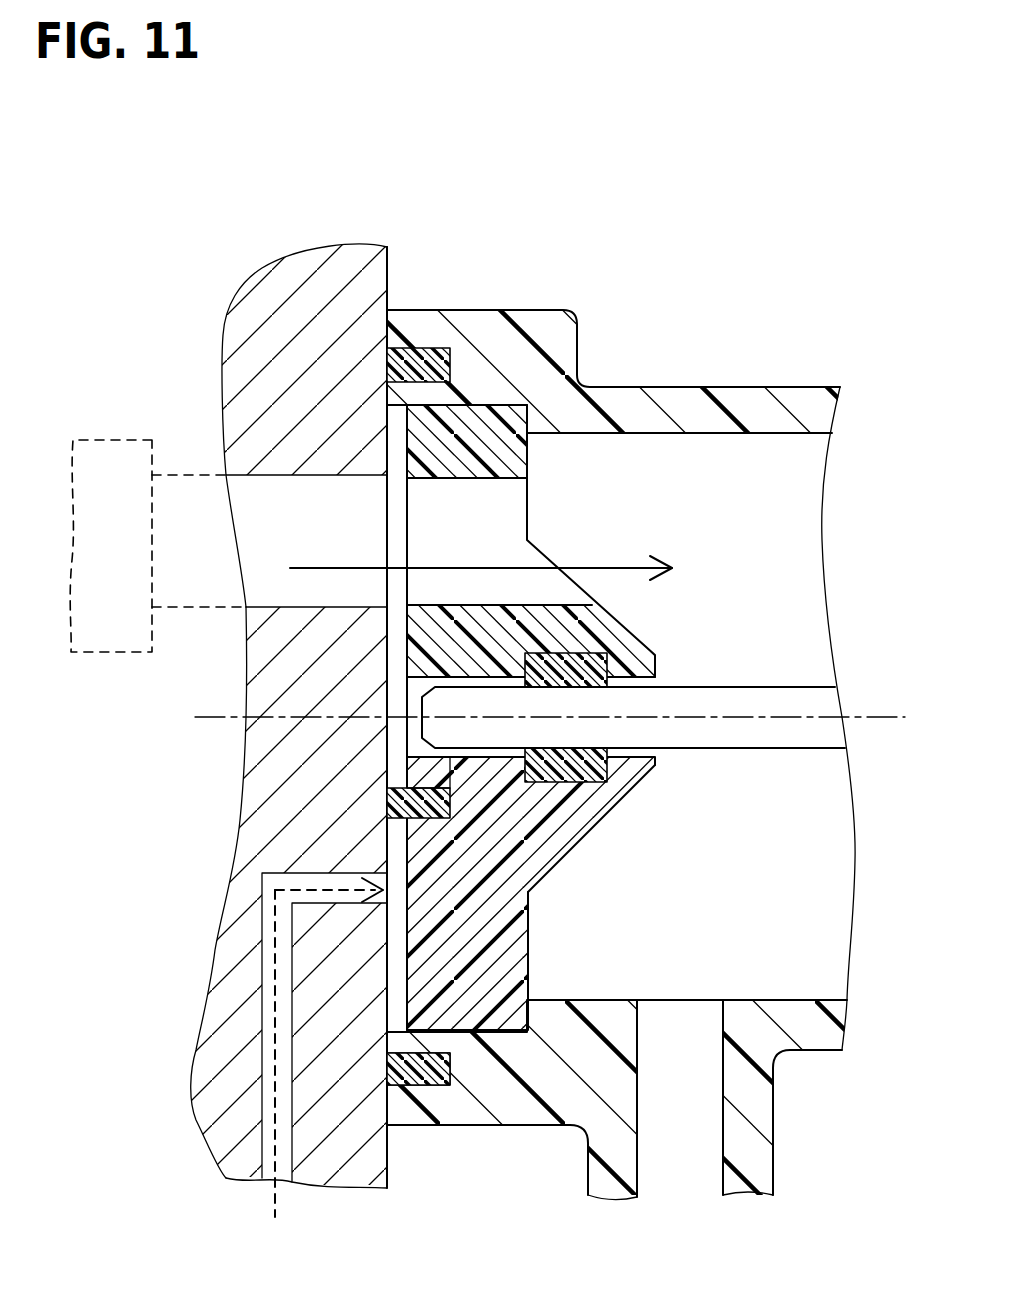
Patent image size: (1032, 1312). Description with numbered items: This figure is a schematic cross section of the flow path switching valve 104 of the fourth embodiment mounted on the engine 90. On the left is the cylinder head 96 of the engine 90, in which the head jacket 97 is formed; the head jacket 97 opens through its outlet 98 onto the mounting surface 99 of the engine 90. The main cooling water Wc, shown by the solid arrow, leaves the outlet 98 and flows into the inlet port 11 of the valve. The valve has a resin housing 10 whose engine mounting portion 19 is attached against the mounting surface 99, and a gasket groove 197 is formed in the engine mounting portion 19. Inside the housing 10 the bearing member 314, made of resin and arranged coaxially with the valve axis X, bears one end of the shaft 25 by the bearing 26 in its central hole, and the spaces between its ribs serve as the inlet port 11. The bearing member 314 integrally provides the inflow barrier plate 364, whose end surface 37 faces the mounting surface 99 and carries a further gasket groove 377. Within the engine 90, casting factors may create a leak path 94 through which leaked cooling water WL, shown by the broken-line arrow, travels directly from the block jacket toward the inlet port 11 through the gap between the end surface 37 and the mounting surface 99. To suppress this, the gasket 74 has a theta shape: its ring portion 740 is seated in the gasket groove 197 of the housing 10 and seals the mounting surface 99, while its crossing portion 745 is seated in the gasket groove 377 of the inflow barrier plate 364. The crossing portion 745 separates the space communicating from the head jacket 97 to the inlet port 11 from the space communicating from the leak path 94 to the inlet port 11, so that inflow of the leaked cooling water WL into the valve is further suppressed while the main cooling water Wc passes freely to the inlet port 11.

The housing 10 is at (708, 380).
The inlet port 11 is at (400, 497).
The engine mounting portion 19 is at (387, 330).
The shaft 25 is at (763, 705).
The bearing 26 is at (565, 665).
The end surface 37 is at (400, 847).
The gasket 74 is at (435, 1087).
The engine 90 is at (202, 328).
The leak path 94 is at (267, 1118).
The cylinder head 96 is at (250, 352).
The head jacket 97 is at (105, 468).
The outlet 98 is at (258, 524).
The mounting surface 99 is at (392, 272).
The flow path switching valve 104 is at (781, 332).
The gasket groove 197 is at (452, 350).
The bearing member 314 is at (640, 816).
The inflow barrier plate 364 is at (447, 958).
The gasket groove 377 is at (437, 818).
The ring portion 740 is at (388, 1073).
The crossing portion 745 is at (393, 790).
The cooling water Wc is at (322, 565).
The cooling water WL is at (275, 950).
The valve axis X is at (867, 713).